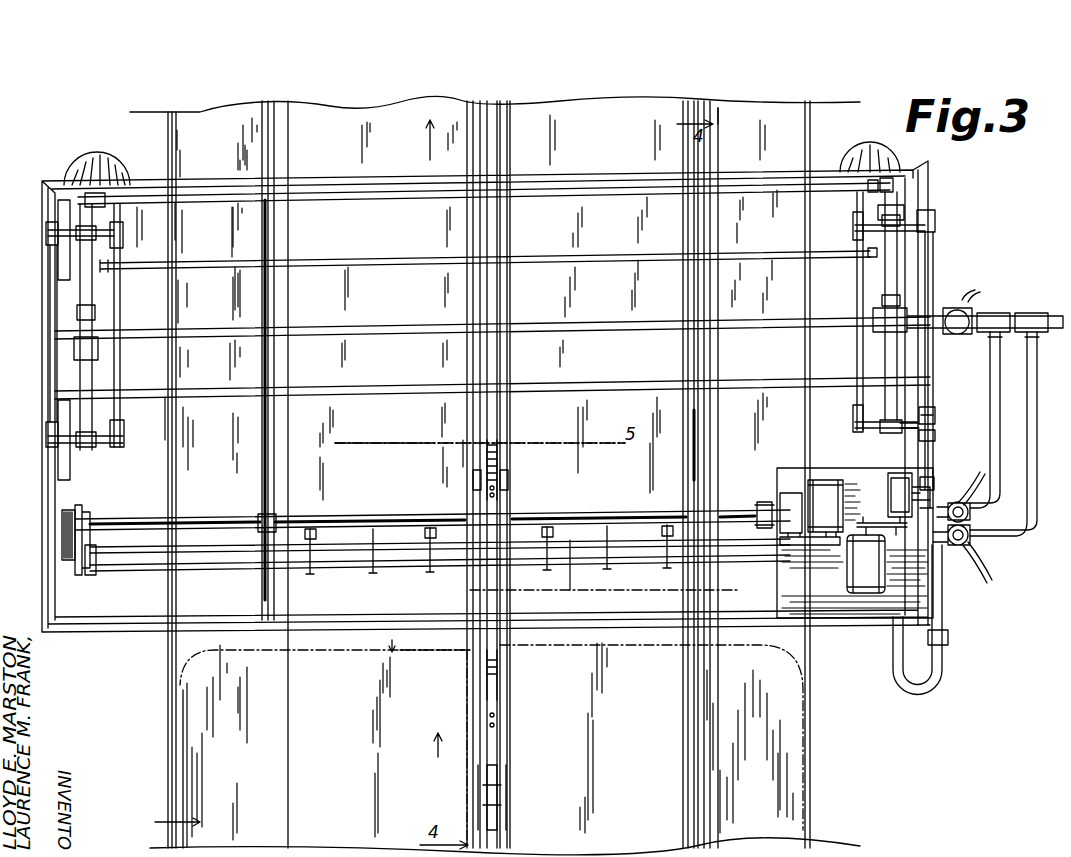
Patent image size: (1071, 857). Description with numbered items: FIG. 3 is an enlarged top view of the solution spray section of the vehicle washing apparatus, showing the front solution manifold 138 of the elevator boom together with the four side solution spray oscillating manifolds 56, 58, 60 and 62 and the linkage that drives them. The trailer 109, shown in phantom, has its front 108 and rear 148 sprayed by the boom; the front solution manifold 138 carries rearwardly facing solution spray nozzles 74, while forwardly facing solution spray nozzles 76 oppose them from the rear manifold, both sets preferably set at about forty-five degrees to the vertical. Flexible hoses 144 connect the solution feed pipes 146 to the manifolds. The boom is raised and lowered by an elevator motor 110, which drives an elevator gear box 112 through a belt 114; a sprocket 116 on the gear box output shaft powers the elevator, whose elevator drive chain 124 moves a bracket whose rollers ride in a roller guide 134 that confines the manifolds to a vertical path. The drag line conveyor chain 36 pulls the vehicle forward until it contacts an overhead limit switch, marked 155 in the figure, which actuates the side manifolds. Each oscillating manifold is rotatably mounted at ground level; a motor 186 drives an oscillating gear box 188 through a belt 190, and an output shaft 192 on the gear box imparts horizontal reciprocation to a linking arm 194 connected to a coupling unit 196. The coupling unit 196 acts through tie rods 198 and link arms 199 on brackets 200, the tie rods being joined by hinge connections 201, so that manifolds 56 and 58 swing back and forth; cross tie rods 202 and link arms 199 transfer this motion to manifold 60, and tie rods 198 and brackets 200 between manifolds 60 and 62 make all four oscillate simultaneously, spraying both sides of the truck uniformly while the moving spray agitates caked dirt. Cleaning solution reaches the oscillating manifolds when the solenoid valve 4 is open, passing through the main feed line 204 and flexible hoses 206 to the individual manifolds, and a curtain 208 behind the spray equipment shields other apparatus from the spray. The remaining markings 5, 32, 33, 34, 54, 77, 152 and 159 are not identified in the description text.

The solenoid valve 4 is at (573, 475).
The center line 5 is at (528, 435).
The valve 32 is at (975, 540).
The valve 33 is at (975, 512).
The supply pipe 34 is at (1045, 303).
The drag line conveyor chain 36 is at (500, 795).
The brush assembly 54 is at (360, 498).
The side solution spray oscillating manifold 56 is at (880, 421).
The side solution spray oscillating manifold 58 is at (872, 213).
The side solution spray oscillating manifold 60 is at (100, 233).
The side solution spray oscillating manifold 62 is at (90, 450).
The solution spray nozzles 74 is at (310, 570).
The solution spray nozzles 76 is at (425, 525).
The coupling 77 is at (210, 565).
The front of the trailer 108 is at (390, 642).
The trailer 109 is at (155, 822).
The elevator motor 110 is at (812, 485).
The elevator gear box 112 is at (780, 500).
The belt 114 is at (815, 548).
The sprocket 116 is at (768, 515).
The elevator drive chain 124 is at (62, 537).
The roller guide 134 is at (70, 555).
The front solution manifold 138 is at (530, 555).
The flexible hoses 144 is at (893, 640).
The solution feed pipes 146 is at (993, 345).
The rear of the trailer 148 is at (429, 455).
The track 152 is at (505, 683).
The indicator 155 is at (500, 463).
The bearing 159 is at (88, 575).
The motor 186 is at (848, 570).
The oscillating gear box 188 is at (890, 488).
The belt 190 is at (885, 522).
The output shaft 192 is at (920, 518).
The linking arm 194 is at (930, 458).
The coupling unit 196 is at (930, 428).
The tie rods 198 is at (118, 308).
The link arms 199 is at (55, 228).
The brackets 200 is at (80, 233).
The hinge connections 201 is at (103, 196).
The cross tie rods 202 is at (435, 195).
The main feed line 204 is at (400, 312).
The flexible hoses 206 is at (80, 293).
The curtain 208 is at (110, 152).